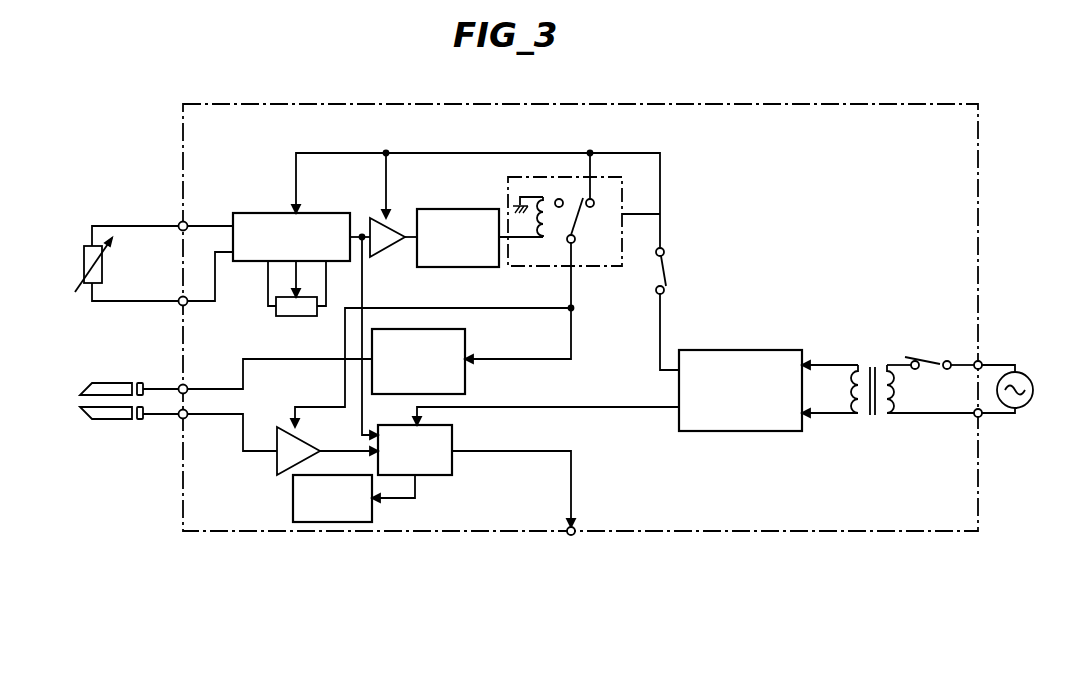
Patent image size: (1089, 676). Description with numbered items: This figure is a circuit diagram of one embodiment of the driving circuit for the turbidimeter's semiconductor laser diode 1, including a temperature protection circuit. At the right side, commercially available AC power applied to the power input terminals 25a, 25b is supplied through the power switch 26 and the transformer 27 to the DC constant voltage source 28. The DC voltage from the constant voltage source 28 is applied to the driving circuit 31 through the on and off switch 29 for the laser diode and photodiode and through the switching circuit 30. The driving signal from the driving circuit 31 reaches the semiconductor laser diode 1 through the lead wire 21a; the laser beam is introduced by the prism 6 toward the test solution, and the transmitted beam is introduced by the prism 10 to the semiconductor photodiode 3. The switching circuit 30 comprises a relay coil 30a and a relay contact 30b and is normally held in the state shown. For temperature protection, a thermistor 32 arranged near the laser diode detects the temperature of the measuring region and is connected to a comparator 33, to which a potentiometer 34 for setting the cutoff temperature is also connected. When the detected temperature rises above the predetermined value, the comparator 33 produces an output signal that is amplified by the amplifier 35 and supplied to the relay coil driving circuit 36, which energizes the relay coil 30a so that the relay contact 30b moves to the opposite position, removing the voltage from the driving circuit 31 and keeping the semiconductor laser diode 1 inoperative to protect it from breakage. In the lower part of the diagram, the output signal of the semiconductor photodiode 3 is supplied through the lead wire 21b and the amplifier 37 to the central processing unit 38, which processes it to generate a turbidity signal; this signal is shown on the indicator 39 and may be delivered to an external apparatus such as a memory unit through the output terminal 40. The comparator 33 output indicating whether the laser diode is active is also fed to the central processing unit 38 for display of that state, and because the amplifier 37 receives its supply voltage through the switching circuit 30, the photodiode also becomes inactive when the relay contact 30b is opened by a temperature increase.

The semiconductor laser diode 1 is at (137, 383).
The semiconductor photodiode 3 is at (137, 419).
The prism 6 is at (88, 383).
The prism 10 is at (95, 419).
The lead wire 21a is at (154, 386).
The lead wire 21b is at (156, 416).
The power input terminal 25a is at (985, 362).
The power input terminal 25b is at (985, 417).
The power switch 26 is at (920, 358).
The transformer 27 is at (871, 366).
The DC constant voltage source 28 is at (713, 352).
The on and off switch 29 is at (668, 270).
The switching circuit 30 is at (622, 180).
The relay coil 30a is at (543, 197).
The relay contact 30b is at (583, 215).
The driving circuit 31 is at (465, 380).
The thermistor 32 is at (84, 262).
The comparator 33 is at (282, 214).
The potentiometer 34 is at (287, 313).
The amplifier 35 is at (372, 222).
The relay coil driving circuit 36 is at (474, 200).
The amplifier 37 is at (280, 463).
The central processing unit 38 is at (452, 460).
The indicator 39 is at (350, 523).
The output terminal 40 is at (571, 535).